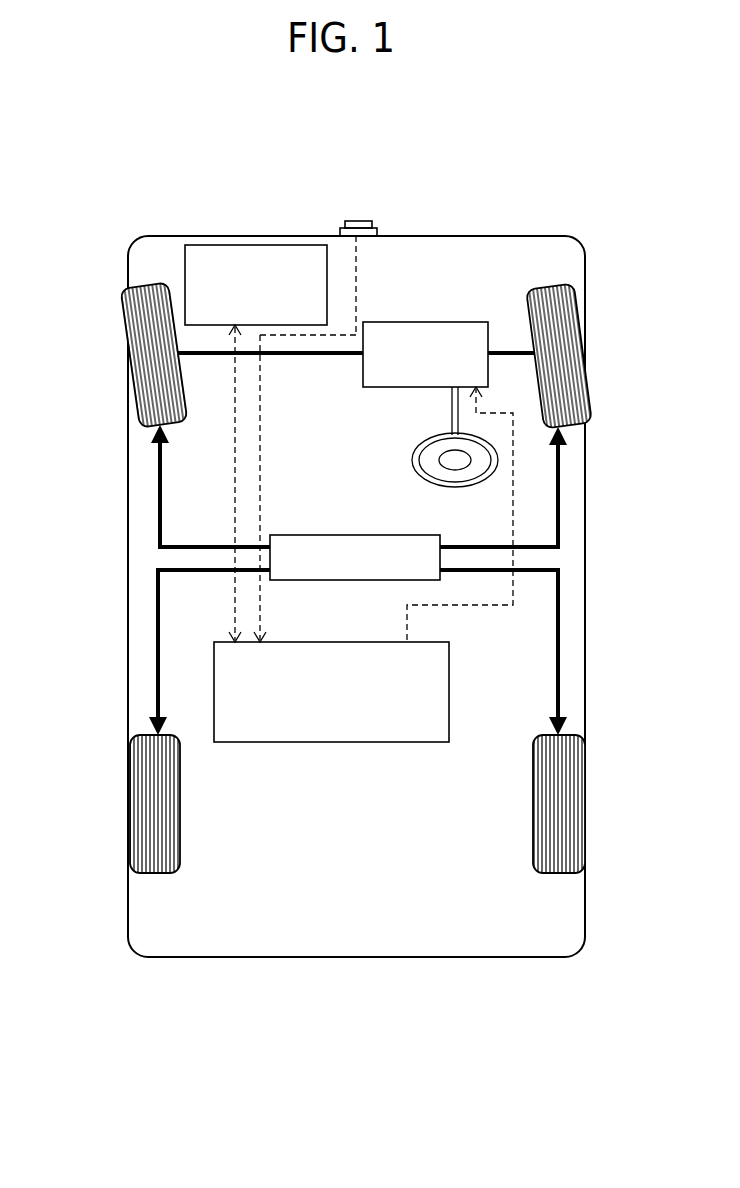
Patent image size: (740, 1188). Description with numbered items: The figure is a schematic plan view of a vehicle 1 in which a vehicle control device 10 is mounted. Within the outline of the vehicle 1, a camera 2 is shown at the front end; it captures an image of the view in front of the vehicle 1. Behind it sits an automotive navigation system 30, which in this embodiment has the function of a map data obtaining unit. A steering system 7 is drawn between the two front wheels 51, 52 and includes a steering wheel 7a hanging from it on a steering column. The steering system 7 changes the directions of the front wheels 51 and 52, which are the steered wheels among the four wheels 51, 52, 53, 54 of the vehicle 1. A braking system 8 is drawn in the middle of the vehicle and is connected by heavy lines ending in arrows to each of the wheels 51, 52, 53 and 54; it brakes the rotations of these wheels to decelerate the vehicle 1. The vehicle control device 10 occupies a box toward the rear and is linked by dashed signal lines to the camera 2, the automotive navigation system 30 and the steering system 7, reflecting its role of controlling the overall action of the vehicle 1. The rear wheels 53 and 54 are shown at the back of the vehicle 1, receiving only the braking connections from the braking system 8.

The vehicle 1 is at (483, 236).
The camera 2 is at (362, 221).
The steering system 7 is at (425, 322).
The steering wheel 7a is at (412, 457).
The braking system 8 is at (355, 535).
The vehicle control device 10 is at (305, 742).
The automotive navigation system 30 is at (245, 245).
The front wheel 51 is at (122, 330).
The front wheel 52 is at (578, 308).
The wheel 53 is at (135, 735).
The wheel 54 is at (578, 735).